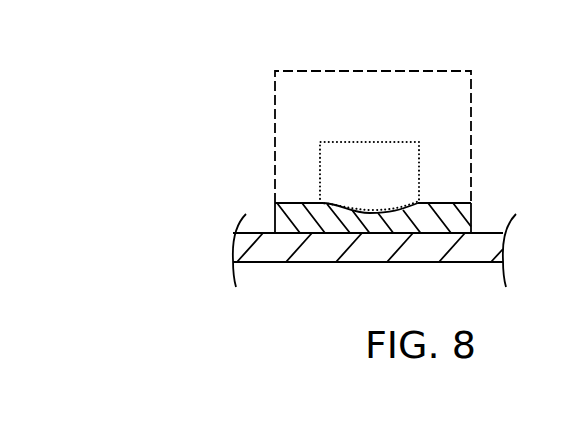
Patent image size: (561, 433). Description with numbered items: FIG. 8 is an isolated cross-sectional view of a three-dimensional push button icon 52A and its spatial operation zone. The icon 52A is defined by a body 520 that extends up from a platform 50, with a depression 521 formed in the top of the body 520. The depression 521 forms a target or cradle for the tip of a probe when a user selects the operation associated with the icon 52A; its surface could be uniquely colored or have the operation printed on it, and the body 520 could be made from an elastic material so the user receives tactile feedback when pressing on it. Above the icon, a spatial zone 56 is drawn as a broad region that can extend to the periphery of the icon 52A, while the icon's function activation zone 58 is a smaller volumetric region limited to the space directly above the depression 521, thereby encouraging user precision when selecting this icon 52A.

The platform 50 is at (370, 253).
The push button icon 52A is at (372, 160).
The body 520 is at (452, 214).
The depression 521 is at (345, 209).
The spatial zone 56 is at (473, 93).
The function activation zone 58 is at (420, 167).